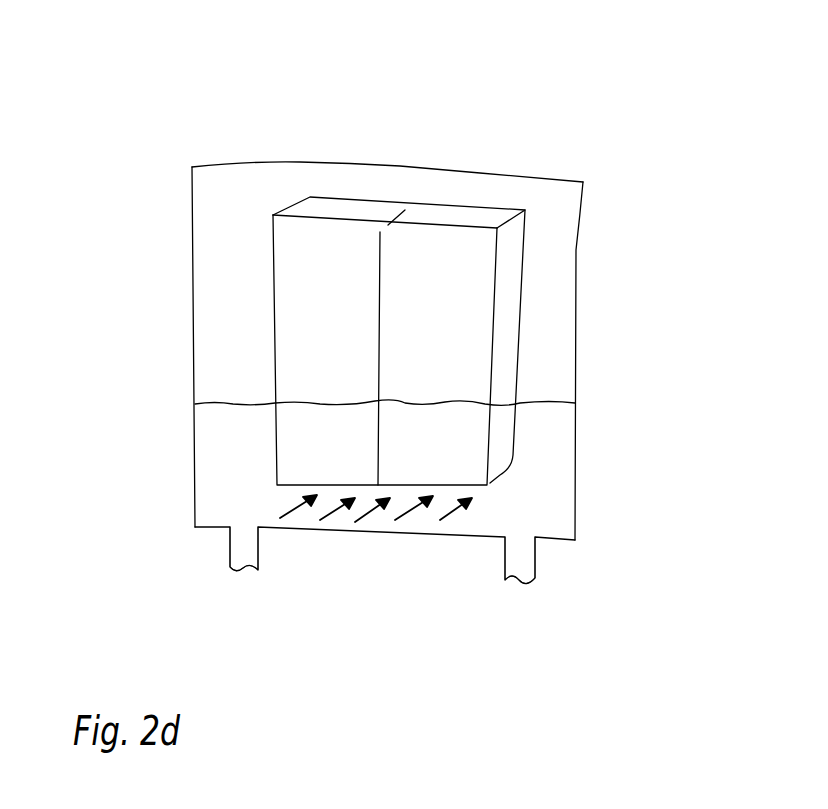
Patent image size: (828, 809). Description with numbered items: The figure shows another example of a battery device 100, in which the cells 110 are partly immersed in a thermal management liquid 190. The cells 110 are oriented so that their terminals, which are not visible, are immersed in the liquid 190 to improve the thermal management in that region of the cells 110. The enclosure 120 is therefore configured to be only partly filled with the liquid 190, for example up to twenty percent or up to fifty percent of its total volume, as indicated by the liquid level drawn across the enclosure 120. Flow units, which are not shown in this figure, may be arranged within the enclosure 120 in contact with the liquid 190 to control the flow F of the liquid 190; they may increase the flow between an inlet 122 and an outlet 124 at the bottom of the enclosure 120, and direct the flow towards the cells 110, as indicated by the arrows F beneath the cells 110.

The battery device 100 is at (645, 145).
The cells 110 is at (368, 198).
The enclosure 120 is at (493, 172).
The inlet 122 is at (222, 555).
The outlet 124 is at (535, 566).
The thermal management liquid 190 is at (233, 403).
The flow F is at (367, 517).